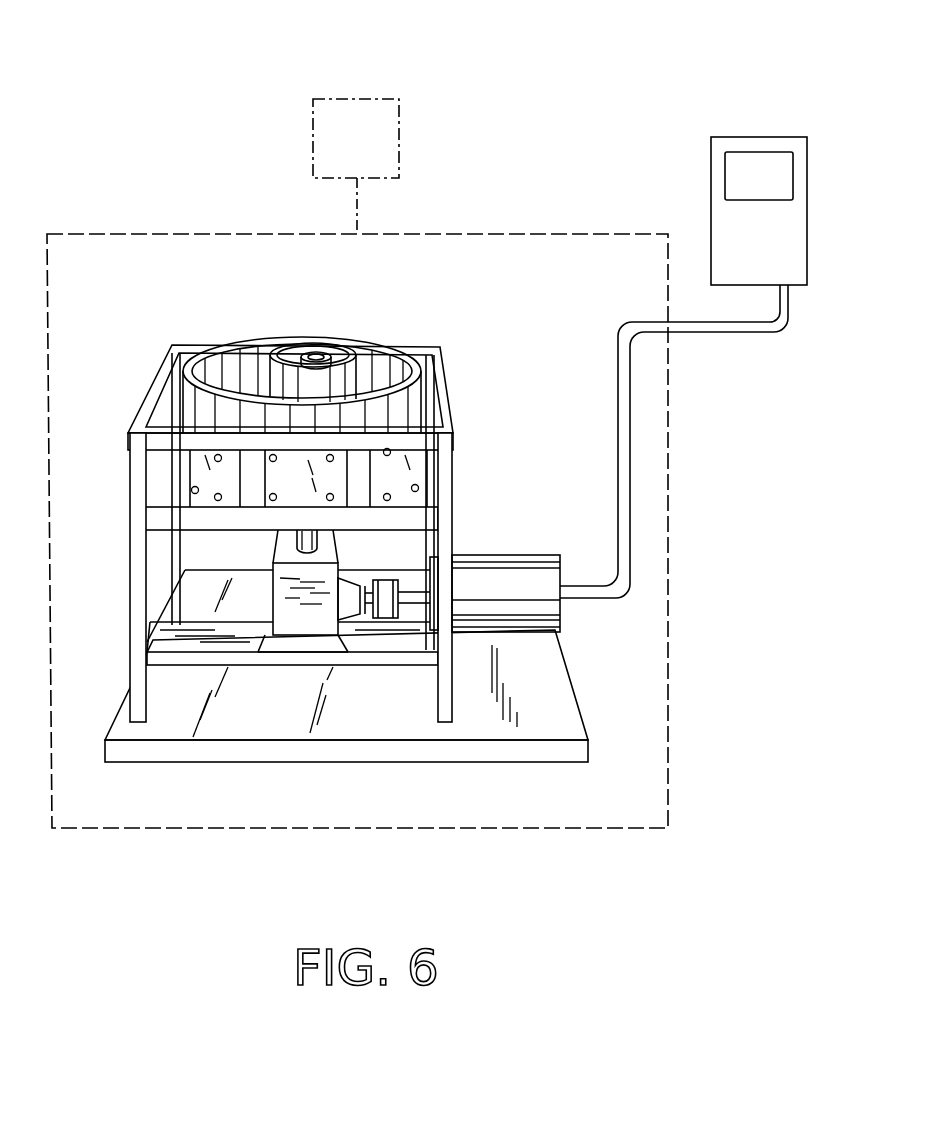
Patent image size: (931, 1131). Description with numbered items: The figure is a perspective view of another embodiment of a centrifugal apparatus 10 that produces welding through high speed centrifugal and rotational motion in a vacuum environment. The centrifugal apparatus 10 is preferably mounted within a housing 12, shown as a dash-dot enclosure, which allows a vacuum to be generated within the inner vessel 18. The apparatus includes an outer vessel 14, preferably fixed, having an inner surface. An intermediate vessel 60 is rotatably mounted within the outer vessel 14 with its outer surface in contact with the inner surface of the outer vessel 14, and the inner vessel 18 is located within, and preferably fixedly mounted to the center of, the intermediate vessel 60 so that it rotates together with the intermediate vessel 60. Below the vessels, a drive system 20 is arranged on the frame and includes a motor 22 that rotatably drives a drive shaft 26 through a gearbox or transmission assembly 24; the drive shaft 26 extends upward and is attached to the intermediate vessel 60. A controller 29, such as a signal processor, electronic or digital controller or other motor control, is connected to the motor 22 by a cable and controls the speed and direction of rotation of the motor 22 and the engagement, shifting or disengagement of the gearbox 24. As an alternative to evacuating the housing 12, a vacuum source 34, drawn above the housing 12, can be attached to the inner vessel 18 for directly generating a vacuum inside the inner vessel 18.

The centrifugal apparatus 10 is at (507, 258).
The housing 12 is at (668, 536).
The outer vessel 14 is at (427, 358).
The inner vessel 18 is at (340, 352).
The drive system 20 is at (382, 576).
The motor 22 is at (500, 587).
The gearbox or transmission assembly 24 is at (303, 625).
The drive shaft 26 is at (300, 540).
The controller 29 is at (798, 251).
The vacuum source 34 is at (380, 99).
The intermediate vessel 60 is at (292, 350).